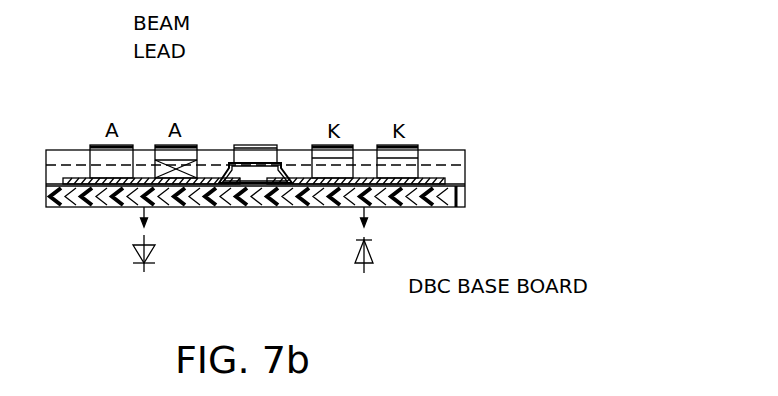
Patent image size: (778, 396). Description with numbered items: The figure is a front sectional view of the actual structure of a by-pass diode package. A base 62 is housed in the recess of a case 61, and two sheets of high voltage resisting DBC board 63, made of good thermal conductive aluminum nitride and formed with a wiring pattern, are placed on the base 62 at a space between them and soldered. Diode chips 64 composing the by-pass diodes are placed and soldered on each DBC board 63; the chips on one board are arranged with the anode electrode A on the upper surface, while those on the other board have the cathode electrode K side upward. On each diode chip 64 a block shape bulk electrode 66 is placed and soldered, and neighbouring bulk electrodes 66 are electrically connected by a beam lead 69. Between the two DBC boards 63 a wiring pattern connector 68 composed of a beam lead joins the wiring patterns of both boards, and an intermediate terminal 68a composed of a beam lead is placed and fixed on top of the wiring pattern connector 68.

The case 61 is at (466, 203).
The base 62 is at (325, 205).
The DBC board 63 is at (412, 186).
The diode chip 64 is at (422, 180).
The bulk electrode 66 is at (90, 148).
The wiring pattern connector 68 is at (257, 183).
The intermediate terminal 68a is at (258, 145).
The beam lead 69 is at (172, 147).